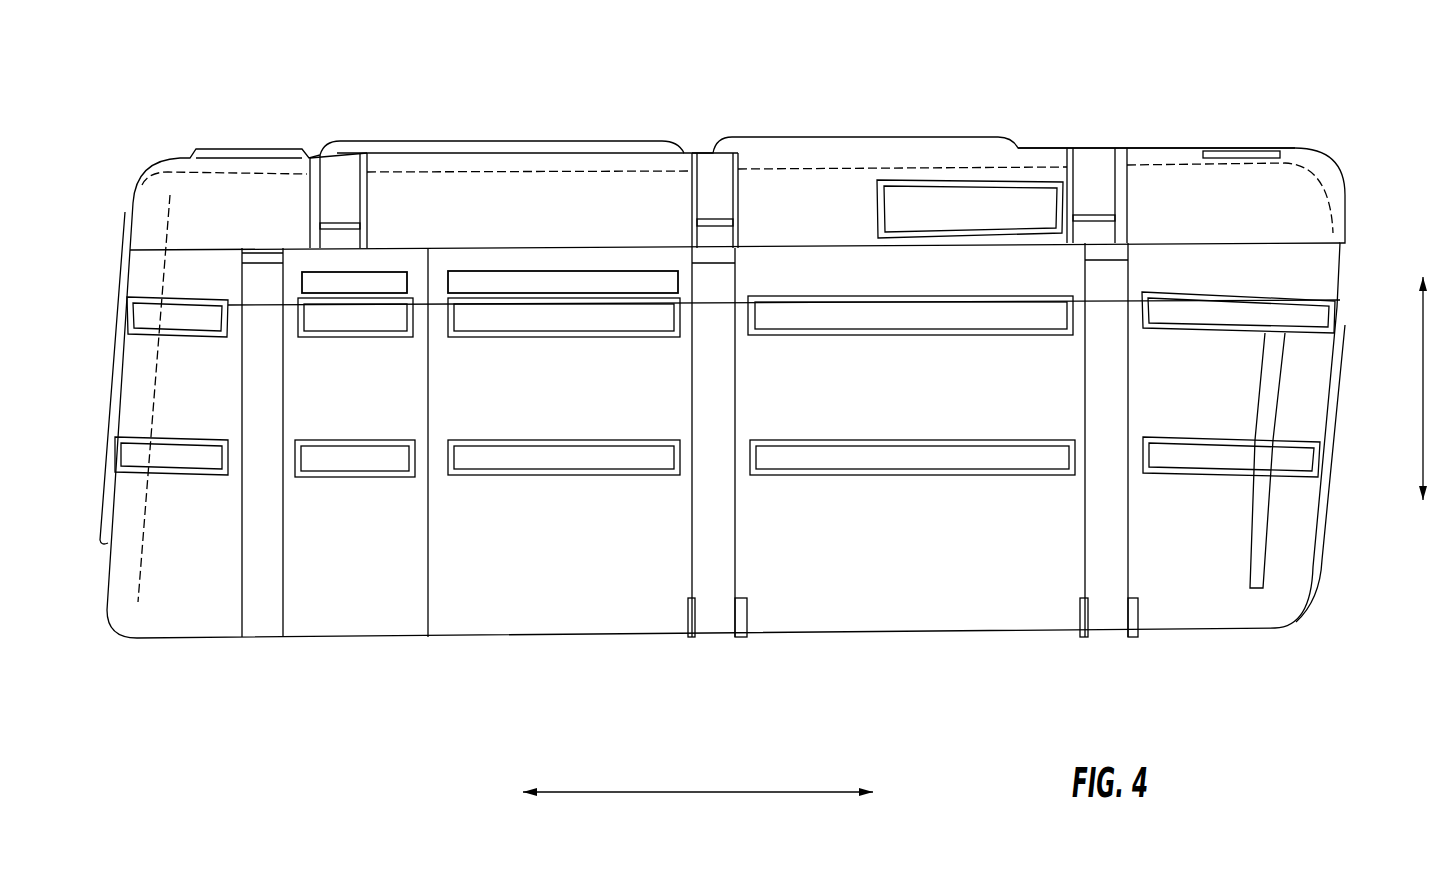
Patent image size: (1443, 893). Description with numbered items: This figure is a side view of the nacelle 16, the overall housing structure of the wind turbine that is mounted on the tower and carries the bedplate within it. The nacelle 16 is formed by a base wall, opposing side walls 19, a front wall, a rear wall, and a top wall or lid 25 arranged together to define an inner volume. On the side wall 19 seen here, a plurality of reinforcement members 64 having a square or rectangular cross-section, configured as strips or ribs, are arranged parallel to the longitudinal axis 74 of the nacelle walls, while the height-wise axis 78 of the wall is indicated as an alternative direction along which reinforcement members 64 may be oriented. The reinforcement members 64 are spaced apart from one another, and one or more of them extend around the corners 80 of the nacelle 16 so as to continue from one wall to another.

The nacelle 16 is at (212, 85).
The side walls 19 is at (968, 607).
The top wall or lid 25 is at (1168, 157).
The reinforcement members 64 is at (382, 273).
The longitudinal axis 74 is at (708, 790).
The height-wise axis 78 is at (1422, 350).
The corners 80 is at (105, 580).